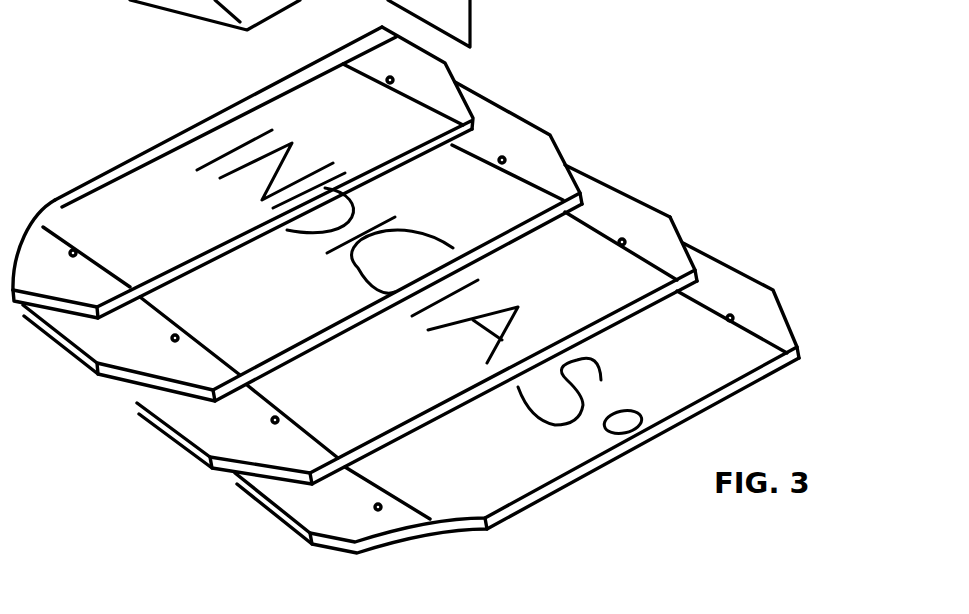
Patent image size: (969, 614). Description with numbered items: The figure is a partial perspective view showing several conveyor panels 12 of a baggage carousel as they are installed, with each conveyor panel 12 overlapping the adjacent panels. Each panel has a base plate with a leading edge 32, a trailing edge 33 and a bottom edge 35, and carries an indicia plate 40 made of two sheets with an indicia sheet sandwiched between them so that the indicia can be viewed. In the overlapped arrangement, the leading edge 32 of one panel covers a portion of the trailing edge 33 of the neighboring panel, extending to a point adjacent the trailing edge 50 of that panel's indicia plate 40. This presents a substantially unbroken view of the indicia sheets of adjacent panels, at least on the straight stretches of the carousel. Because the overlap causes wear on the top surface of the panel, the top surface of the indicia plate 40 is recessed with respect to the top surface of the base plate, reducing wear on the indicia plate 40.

The conveyor panel 12 is at (773, 277).
The leading edge 32 is at (463, 127).
The trailing edge 33 is at (586, 165).
The bottom edge 35 is at (90, 0).
The indicia plate 40 is at (620, 275).
The trailing edge of indicia plate 50 is at (322, 93).